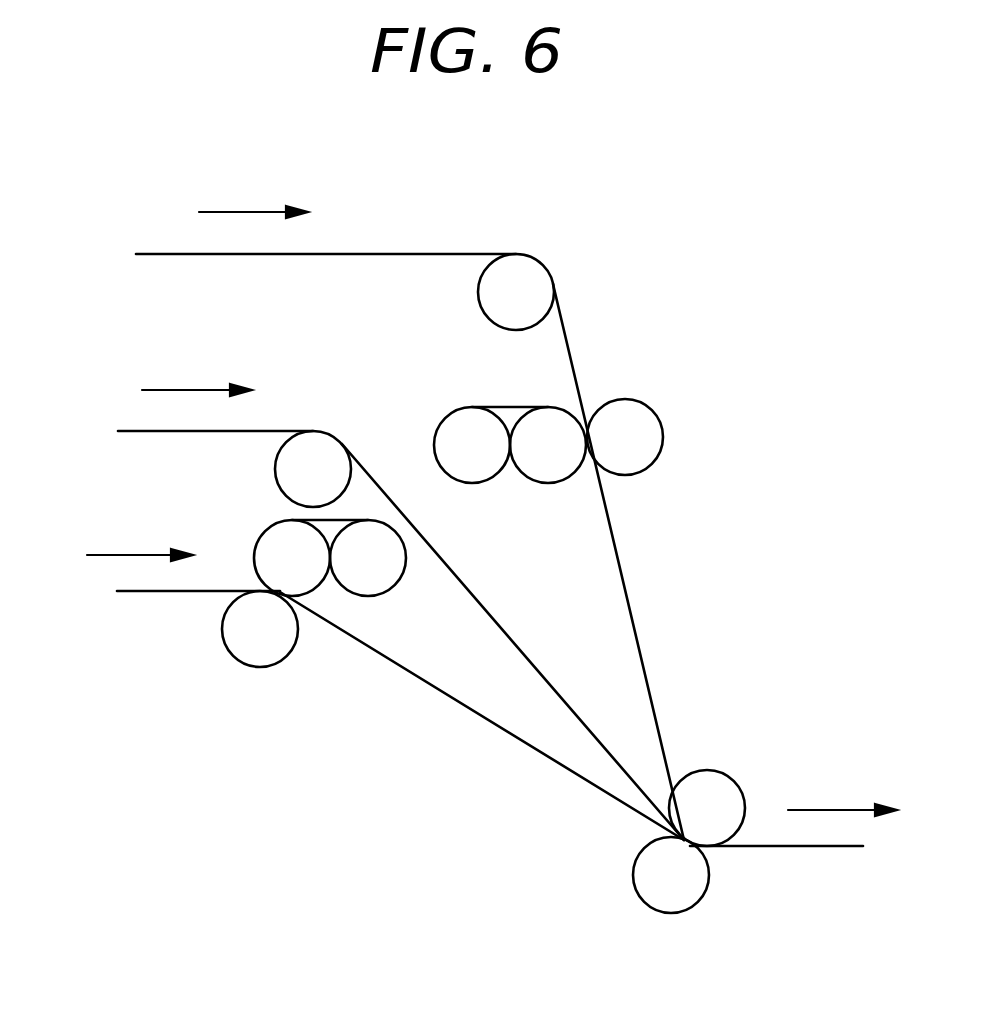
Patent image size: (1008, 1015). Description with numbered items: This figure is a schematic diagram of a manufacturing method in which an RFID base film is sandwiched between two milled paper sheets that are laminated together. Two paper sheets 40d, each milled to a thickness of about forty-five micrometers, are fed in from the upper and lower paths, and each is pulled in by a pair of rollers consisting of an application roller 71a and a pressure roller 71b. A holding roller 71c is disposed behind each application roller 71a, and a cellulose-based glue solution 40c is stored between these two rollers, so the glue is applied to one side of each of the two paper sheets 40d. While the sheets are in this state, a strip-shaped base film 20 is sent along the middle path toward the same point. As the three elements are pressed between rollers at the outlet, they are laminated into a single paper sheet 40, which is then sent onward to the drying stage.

The base film 20 is at (133, 431).
The paper sheet 40 is at (795, 847).
The cellulose-based glue solution 40c is at (506, 406).
The paper sheet 40d is at (160, 255).
The application roller 71a is at (548, 484).
The pressure roller 71b is at (664, 414).
The holding roller 71c is at (472, 484).